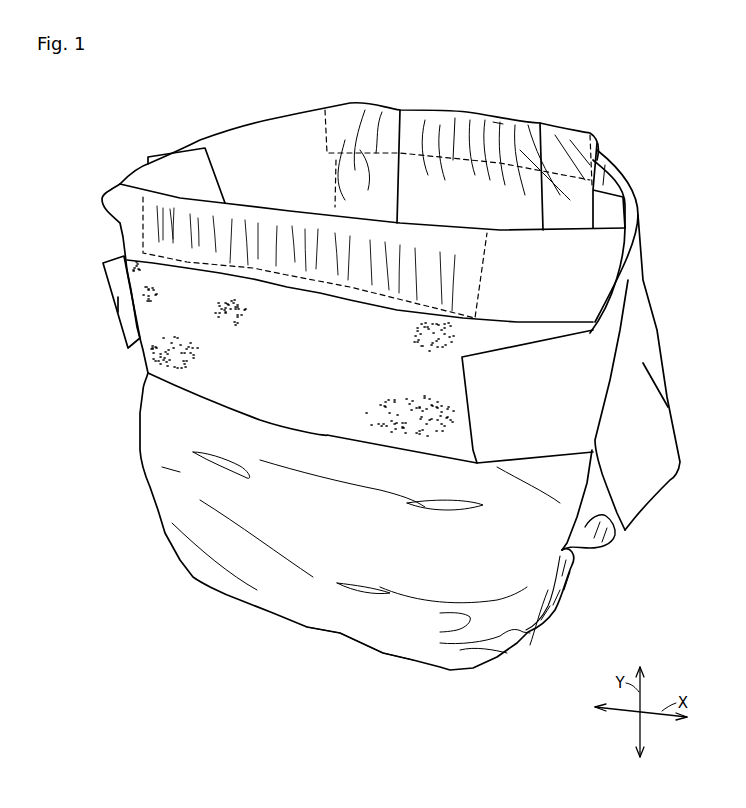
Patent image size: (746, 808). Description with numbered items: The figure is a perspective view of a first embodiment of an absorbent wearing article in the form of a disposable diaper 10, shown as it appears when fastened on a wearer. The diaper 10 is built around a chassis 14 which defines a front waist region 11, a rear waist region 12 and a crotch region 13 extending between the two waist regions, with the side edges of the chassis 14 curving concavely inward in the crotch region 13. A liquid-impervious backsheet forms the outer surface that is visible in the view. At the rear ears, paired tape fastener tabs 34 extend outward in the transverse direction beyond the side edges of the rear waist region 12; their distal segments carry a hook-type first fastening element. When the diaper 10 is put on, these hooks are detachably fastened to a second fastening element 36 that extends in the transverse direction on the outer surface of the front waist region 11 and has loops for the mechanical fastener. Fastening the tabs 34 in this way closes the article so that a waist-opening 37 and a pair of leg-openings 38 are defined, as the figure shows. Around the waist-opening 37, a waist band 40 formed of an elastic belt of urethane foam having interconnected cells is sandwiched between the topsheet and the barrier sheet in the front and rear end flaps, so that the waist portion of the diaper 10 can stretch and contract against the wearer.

The diaper 10 is at (654, 187).
The front waist region 11 is at (153, 228).
The rear waist region 12 is at (298, 128).
The crotch region 13 is at (340, 617).
The chassis 14 is at (610, 183).
The tape fastener tabs 34 is at (113, 312).
The second fastening element 36 is at (270, 403).
The waist-opening 37 is at (497, 123).
The leg-openings 38 is at (588, 518).
The waist band 40 is at (350, 117).